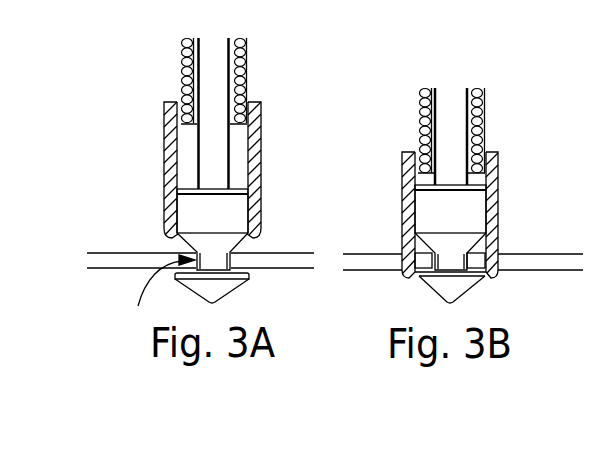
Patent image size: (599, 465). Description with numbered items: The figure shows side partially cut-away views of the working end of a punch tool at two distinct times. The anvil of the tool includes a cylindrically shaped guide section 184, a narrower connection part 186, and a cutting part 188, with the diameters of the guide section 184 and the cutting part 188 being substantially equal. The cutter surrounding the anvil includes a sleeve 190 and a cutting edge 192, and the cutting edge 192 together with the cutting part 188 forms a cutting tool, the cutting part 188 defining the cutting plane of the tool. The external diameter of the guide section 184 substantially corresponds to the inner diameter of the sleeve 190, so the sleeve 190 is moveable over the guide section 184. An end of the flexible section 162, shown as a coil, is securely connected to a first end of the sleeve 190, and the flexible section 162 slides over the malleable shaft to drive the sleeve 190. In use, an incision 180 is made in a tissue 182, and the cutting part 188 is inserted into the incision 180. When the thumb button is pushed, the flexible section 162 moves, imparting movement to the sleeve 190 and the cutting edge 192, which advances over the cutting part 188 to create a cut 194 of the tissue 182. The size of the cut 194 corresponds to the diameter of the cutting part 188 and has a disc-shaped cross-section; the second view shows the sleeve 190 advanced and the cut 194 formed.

In FIG. 3A, the flexible section 162 is at (180, 70).
In FIG. 3B, the flexible section 162 is at (420, 113).
In FIG. 3A, the sleeve 190 is at (163, 163).
In FIG. 3B, the sleeve 190 is at (402, 188).
In FIG. 3A, the guide section 184 is at (205, 218).
In FIG. 3B, the guide section 184 is at (446, 218).
In FIG. 3A, the cutting edge 192 is at (175, 220).
In FIG. 3B, the cutting edge 192 is at (407, 258).
In FIG. 3A, the tissue 182 is at (137, 257).
In FIG. 3B, the tissue 182 is at (463, 262).
In FIG. 3A, the incision 180 is at (165, 291).
In FIG. 3A, the connection part 186 is at (248, 275).
In FIG. 3B, the connection part 186 is at (488, 277).
In FIG. 3A, the cutting part 188 is at (230, 293).
In FIG. 3B, the cutting part 188 is at (453, 296).
In FIG. 3B, the cut 194 is at (482, 260).